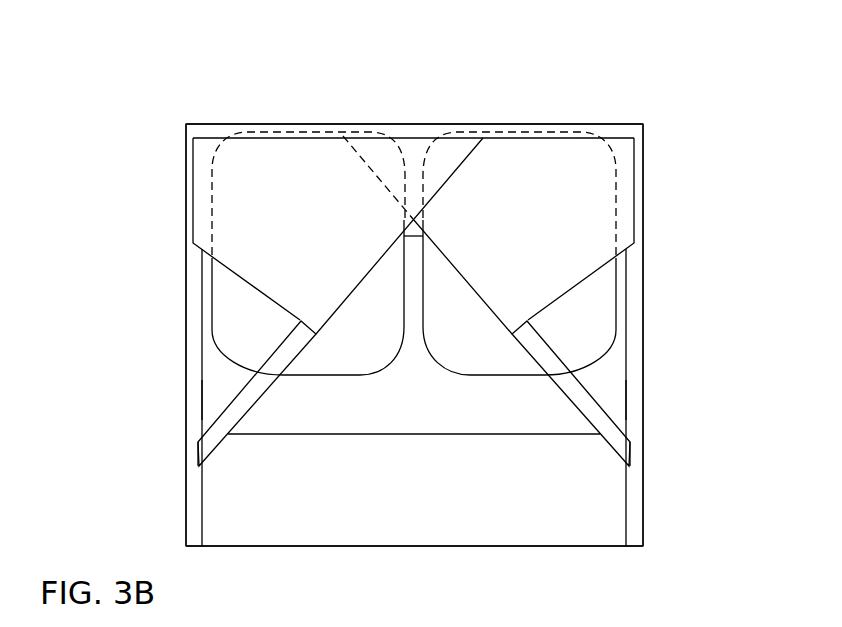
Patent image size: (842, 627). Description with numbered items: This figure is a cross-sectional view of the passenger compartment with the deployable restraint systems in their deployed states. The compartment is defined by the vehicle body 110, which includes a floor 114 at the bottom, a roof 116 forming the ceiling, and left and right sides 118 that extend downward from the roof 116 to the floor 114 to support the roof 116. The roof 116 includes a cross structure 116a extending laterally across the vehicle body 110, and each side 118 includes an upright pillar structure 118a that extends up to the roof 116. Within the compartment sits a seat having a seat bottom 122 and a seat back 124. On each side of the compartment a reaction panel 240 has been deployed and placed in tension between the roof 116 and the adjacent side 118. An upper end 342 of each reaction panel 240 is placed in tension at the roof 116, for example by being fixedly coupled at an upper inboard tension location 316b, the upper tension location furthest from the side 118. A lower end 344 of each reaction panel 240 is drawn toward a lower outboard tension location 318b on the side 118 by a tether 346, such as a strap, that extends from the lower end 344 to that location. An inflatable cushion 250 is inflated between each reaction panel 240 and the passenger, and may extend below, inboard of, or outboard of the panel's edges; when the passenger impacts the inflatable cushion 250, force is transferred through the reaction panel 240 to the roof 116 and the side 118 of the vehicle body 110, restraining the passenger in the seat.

The vehicle body 110 is at (594, 82).
The floor 114 is at (524, 548).
The roof 116 is at (382, 124).
The cross structure 116a is at (437, 137).
The side 118 is at (187, 494).
The pillar structure 118a is at (190, 521).
The seat bottom 122 is at (431, 499).
The seat back 124 is at (431, 401).
The reaction panel 240 is at (196, 178).
The inflatable cushion 250 is at (226, 285).
The upper inboard tension location 316b is at (346, 133).
The lower outboard tension location 318b is at (200, 456).
The upper end 342 is at (210, 136).
The lower end 344 is at (296, 318).
The tether 346 is at (204, 397).